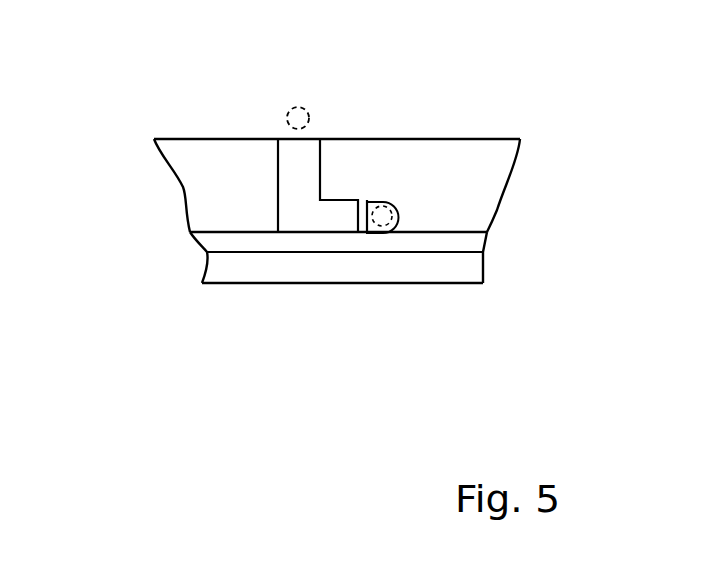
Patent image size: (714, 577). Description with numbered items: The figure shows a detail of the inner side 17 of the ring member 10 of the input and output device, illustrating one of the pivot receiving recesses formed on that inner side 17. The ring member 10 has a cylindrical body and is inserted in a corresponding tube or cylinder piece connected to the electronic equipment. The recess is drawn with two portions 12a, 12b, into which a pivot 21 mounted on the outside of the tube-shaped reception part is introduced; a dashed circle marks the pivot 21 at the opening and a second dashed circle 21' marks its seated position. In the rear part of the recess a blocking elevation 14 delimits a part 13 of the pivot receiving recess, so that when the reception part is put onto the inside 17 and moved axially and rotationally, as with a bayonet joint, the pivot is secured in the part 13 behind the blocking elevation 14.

The ring member 10 is at (455, 137).
The inner side 17 is at (214, 153).
The first recess wall 12a is at (290, 174).
The second recess wall 12b is at (335, 220).
The blocking elevation 14 is at (362, 228).
The part of the pivot receiving recess 13 is at (398, 210).
The pivot 21 is at (298, 70).
The fastening element 21' is at (399, 309).